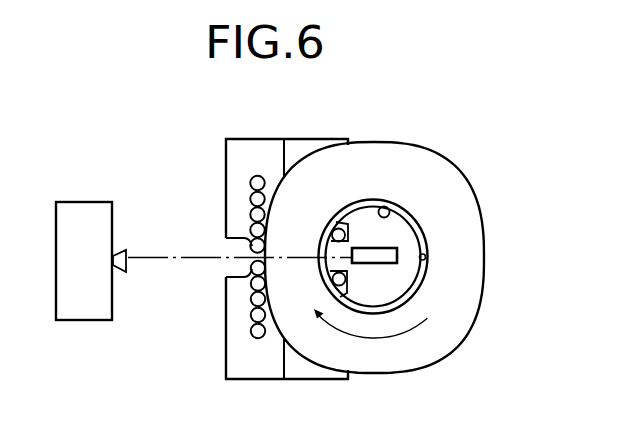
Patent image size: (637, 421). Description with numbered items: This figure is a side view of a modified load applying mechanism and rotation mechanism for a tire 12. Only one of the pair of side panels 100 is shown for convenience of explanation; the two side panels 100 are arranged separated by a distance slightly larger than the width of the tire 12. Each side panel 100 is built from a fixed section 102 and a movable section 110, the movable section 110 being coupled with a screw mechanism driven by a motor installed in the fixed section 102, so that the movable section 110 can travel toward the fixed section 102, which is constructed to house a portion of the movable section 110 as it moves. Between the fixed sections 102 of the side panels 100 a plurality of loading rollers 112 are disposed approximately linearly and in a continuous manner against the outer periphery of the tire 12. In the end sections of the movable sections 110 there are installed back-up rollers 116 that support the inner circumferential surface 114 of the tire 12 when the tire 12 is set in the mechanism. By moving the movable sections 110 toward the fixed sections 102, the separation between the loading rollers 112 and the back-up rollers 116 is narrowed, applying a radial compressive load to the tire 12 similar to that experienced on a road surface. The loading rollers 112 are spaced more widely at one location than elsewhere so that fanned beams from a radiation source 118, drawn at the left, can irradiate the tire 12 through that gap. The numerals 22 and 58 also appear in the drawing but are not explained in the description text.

The tire 12 is at (385, 153).
The ring 22 is at (385, 248).
The marker 58 is at (426, 257).
The side panel 100 is at (242, 132).
The fixed section 102 is at (265, 155).
The movable section 110 is at (320, 145).
The loading rollers 112 is at (251, 272).
The inner circumferential surface 114 is at (389, 213).
The back-up rollers 116 is at (347, 271).
The radiation source 118 is at (85, 212).